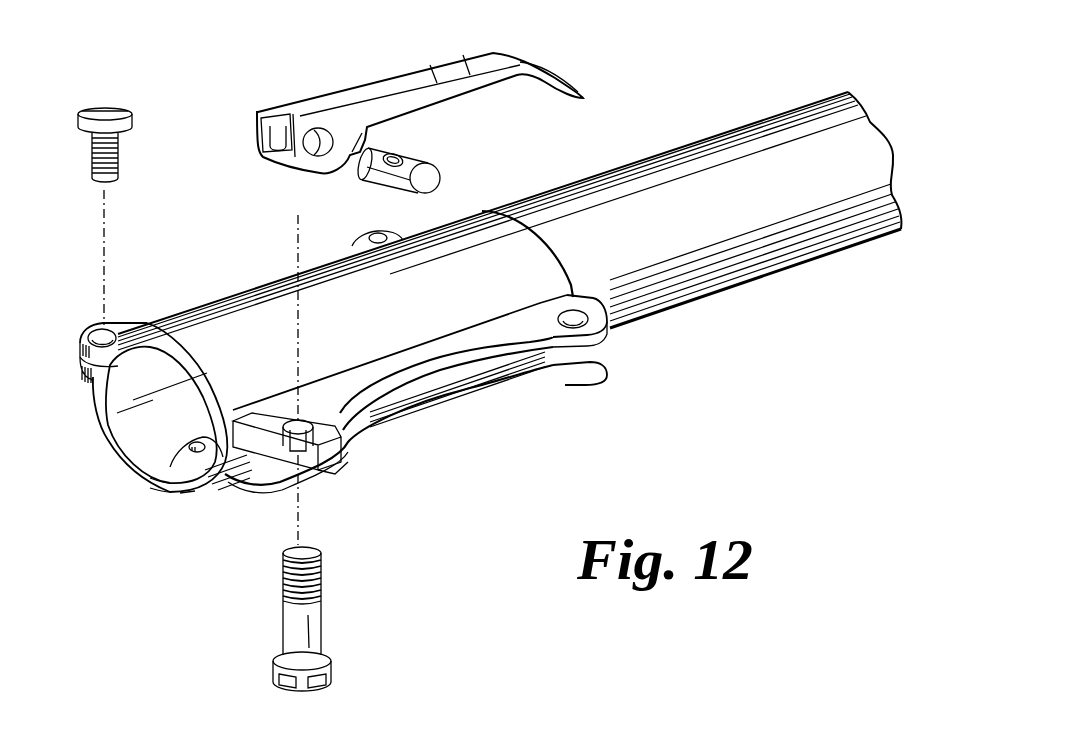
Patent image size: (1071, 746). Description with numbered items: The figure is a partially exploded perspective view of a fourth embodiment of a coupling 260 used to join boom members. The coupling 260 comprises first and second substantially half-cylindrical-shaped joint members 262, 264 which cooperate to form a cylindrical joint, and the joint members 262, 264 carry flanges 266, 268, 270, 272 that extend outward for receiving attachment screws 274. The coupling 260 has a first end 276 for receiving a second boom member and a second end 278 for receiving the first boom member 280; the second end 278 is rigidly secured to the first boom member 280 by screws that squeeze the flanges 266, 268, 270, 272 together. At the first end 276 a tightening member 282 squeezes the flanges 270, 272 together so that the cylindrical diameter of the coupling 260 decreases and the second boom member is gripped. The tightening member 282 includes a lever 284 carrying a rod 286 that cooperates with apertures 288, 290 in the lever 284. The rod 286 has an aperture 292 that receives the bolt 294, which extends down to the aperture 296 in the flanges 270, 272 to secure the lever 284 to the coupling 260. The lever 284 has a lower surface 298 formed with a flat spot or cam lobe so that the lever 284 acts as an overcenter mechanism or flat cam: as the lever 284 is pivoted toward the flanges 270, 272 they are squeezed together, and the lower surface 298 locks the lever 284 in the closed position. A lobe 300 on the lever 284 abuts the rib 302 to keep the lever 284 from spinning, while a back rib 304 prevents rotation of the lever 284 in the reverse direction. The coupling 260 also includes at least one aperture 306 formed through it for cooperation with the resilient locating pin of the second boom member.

The coupling 260 is at (262, 266).
The first joint member 262 is at (230, 300).
The second joint member 264 is at (150, 480).
The flange 266 is at (78, 342).
The flange 268 is at (80, 372).
The flange 270 is at (370, 416).
The flange 272 is at (449, 350).
The attachment screw 274 is at (133, 120).
The first end 276 is at (195, 478).
The second end 278 is at (478, 228).
The first boom member 280 is at (706, 256).
The tightening member 282 is at (245, 166).
The lever 284 is at (340, 92).
The rod 286 is at (420, 152).
The aperture 288 is at (310, 100).
The aperture 290 is at (318, 160).
The aperture 292 is at (385, 154).
The bolt 294 is at (272, 674).
The aperture 296 is at (293, 395).
The lower surface 298 is at (338, 172).
The lobe 300 is at (349, 148).
The rib 302 is at (352, 458).
The back rib 304 is at (238, 414).
The aperture 306 is at (152, 462).